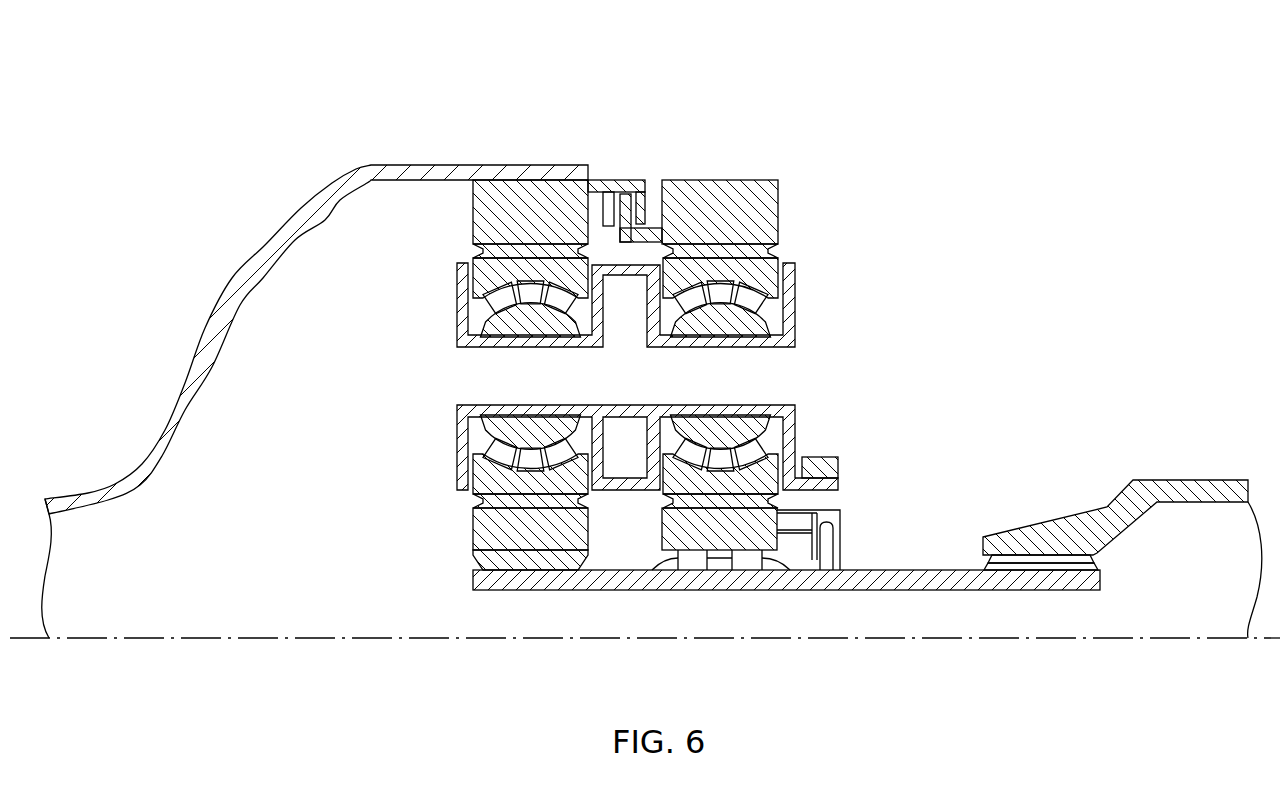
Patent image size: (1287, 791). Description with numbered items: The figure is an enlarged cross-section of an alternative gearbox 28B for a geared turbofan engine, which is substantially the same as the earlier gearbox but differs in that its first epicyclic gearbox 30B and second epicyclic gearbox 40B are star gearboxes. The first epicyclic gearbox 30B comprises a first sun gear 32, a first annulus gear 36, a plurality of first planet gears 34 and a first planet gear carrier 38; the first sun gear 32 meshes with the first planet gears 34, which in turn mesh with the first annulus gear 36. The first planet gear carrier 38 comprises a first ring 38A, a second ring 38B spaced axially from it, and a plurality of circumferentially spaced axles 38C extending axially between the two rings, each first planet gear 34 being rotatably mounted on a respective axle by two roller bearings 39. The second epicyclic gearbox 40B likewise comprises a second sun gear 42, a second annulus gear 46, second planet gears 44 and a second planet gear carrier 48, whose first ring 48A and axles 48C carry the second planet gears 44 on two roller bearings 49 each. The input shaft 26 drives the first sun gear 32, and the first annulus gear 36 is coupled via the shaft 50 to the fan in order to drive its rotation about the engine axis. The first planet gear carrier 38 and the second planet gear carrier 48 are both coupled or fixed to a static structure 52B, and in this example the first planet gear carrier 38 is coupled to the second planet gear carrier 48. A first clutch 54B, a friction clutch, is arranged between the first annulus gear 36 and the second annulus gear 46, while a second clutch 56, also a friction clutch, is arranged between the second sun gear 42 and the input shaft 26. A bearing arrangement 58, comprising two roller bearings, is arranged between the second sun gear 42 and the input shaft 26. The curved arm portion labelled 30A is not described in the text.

The input shaft 26 is at (1048, 580).
The gearbox 28B is at (975, 115).
The curved arm portion 30A is at (475, 200).
The first epicyclic gearbox 30B is at (418, 237).
The first sun gear 32 is at (503, 537).
The first planet gear 34 is at (498, 272).
The first annulus gear 36 is at (565, 206).
The first planet gear carrier 38 is at (455, 336).
The first ring 38A is at (465, 300).
The second ring 38B is at (613, 293).
The axles 38C is at (483, 348).
The planet gear bearing 39 is at (538, 327).
The second epicyclic gearbox 40B is at (792, 163).
The second sun gear 42 is at (738, 528).
The second planet gear 44 is at (765, 268).
The second annulus gear 46 is at (700, 206).
The second planet gear carrier 48 is at (796, 287).
The first ring 48A is at (786, 306).
The axles 48C is at (757, 340).
The planet gear bearing 49 is at (745, 305).
The shaft 50 is at (102, 501).
The static structure 52B is at (822, 465).
The first clutch 54B is at (620, 160).
The second clutch 56 is at (843, 503).
The bearing arrangement 58 is at (750, 556).